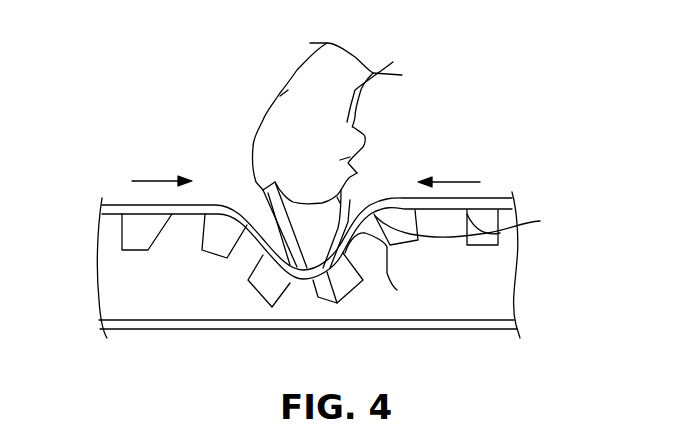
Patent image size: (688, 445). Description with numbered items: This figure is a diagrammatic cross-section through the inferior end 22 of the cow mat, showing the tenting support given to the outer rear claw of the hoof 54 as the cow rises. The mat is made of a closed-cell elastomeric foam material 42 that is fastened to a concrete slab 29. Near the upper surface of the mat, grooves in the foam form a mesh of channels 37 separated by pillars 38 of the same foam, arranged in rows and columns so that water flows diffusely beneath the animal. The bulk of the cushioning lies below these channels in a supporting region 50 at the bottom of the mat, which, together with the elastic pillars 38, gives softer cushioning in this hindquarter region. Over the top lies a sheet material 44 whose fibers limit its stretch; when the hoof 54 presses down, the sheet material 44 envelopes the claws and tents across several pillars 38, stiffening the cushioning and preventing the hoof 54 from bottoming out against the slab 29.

The inferior end 22 is at (495, 120).
The concrete slab 29 is at (323, 358).
The channels 37 is at (474, 223).
The pillars 38 is at (340, 300).
The closed-cell elastomeric foam material 42 is at (497, 282).
The sheet material 44 is at (495, 204).
The supporting region 50 is at (107, 252).
The hoof 54 is at (370, 207).